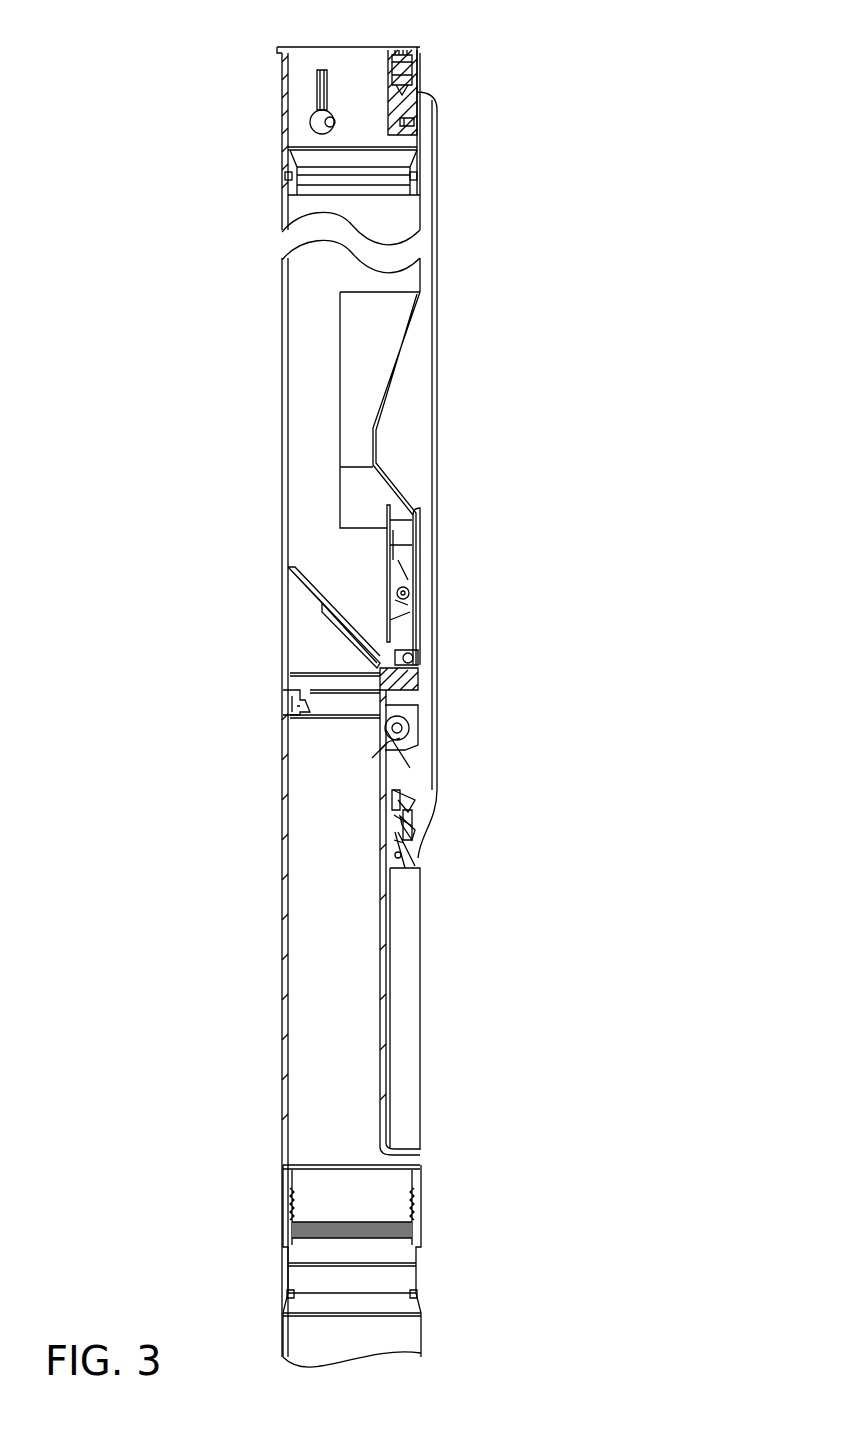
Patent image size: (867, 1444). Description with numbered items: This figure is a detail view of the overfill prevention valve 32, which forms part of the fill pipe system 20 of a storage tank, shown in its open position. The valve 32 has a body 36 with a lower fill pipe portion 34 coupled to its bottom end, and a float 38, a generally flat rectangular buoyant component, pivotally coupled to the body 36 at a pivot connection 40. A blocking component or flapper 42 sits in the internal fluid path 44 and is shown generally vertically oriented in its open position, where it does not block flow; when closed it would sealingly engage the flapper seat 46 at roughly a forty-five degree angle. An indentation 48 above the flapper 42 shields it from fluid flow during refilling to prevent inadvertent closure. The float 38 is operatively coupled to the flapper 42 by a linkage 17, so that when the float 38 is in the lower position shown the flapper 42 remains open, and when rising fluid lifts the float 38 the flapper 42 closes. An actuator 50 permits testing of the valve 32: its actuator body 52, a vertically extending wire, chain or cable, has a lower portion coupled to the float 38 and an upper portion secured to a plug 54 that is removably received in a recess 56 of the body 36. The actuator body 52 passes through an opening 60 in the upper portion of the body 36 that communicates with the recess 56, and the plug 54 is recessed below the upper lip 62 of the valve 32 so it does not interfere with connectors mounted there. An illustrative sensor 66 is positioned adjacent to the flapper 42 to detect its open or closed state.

The linkage 17 is at (450, 672).
The fill pipe system 20 is at (252, 508).
The overfill prevention valve 32 is at (268, 590).
The lower fill pipe portion 34 is at (423, 1330).
The body 36 is at (415, 120).
The float 38 is at (415, 1020).
The pivot connection 40 is at (405, 726).
The flapper 42 is at (418, 598).
The fluid path 44 is at (300, 760).
The flapper seat 46 is at (292, 567).
The indentation 48 is at (385, 408).
The actuator 50 is at (437, 358).
The actuator body 52 is at (437, 210).
The plug 54 is at (413, 62).
The recess 56 is at (393, 52).
The opening 60 is at (419, 90).
The upper lip 62 is at (277, 48).
The sensor 66 is at (297, 598).